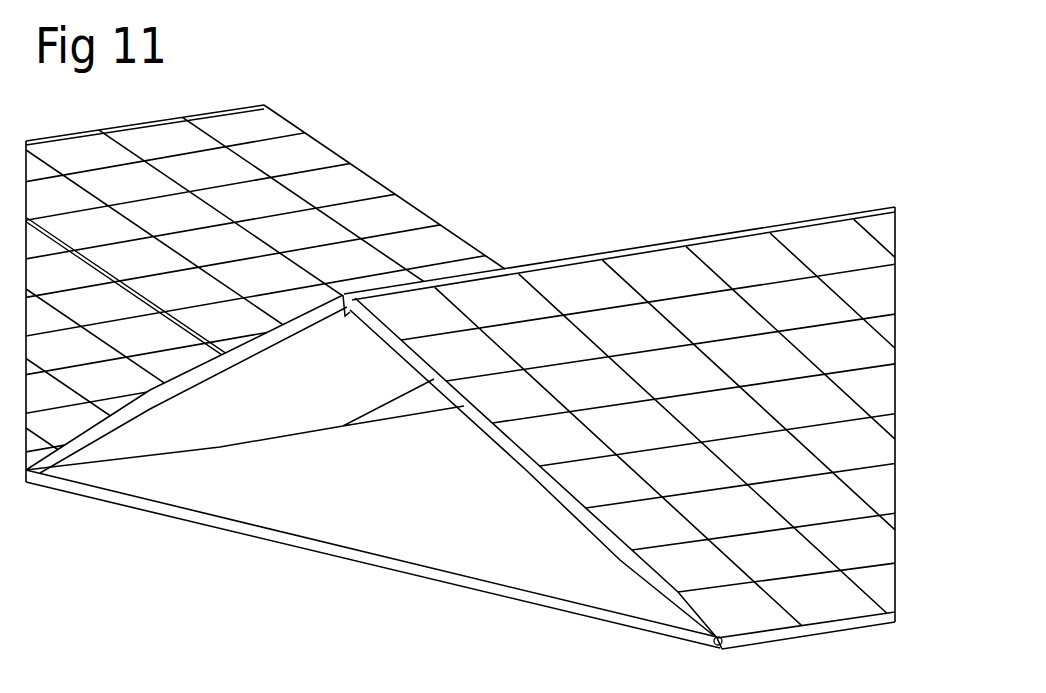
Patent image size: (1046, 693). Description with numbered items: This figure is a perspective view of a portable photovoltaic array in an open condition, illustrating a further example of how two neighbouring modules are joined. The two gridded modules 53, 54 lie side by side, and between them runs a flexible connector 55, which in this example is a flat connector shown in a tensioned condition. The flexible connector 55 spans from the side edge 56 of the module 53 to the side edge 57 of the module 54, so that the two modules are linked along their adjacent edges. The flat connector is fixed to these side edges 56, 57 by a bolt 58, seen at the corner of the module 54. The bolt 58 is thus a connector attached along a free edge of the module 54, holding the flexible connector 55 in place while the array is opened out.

The module 53 is at (257, 540).
The module 54 is at (657, 400).
The flexible connector 55 is at (372, 597).
The side edge 56 is at (250, 358).
The side edge 57 is at (550, 495).
The bolt 58 is at (712, 640).